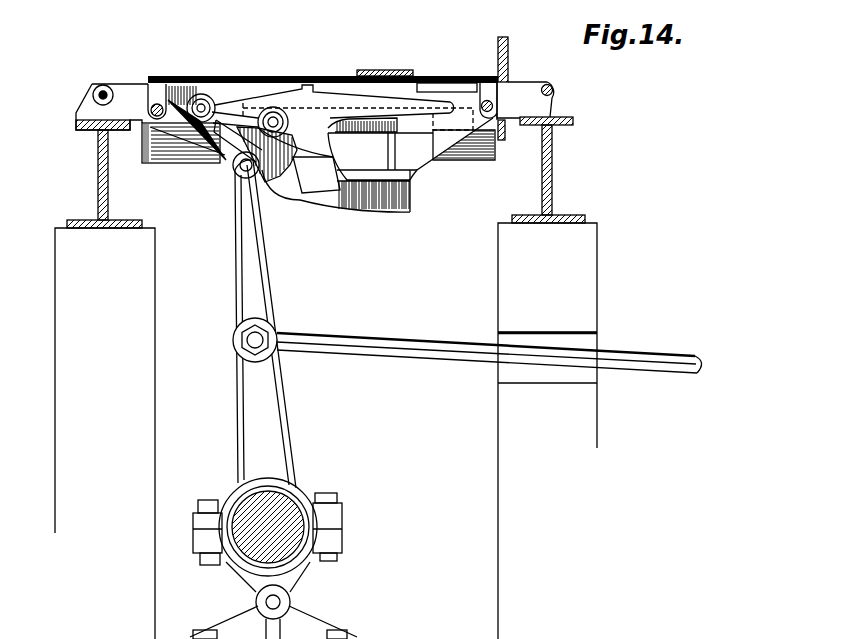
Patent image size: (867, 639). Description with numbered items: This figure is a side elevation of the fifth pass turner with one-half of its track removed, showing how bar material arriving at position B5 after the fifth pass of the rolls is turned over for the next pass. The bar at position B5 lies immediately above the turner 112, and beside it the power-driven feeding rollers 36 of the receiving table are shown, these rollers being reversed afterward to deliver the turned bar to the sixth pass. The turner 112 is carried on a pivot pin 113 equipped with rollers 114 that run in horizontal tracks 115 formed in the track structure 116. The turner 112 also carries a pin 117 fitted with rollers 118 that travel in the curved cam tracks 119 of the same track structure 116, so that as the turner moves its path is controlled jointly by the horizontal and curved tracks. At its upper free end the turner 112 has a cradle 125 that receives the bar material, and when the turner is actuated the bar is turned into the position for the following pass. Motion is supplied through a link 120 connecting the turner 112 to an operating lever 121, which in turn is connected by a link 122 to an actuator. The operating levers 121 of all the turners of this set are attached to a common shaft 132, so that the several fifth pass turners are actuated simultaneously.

The feeding rollers 36 is at (157, 167).
The turner 112 is at (270, 104).
The pivot pin 113 is at (233, 160).
The rollers 114 is at (292, 122).
The horizontal tracks 115 is at (368, 133).
The track structure 116 is at (432, 163).
The pin 117 is at (200, 93).
The rollers 118 is at (214, 97).
The curved cam tracks 119 is at (375, 208).
The link 120 is at (227, 145).
The operating lever 121 is at (242, 265).
The link 122 is at (390, 340).
The cradle 125 is at (336, 88).
The bar material position B5 is at (398, 72).
The shaft 132 is at (293, 547).